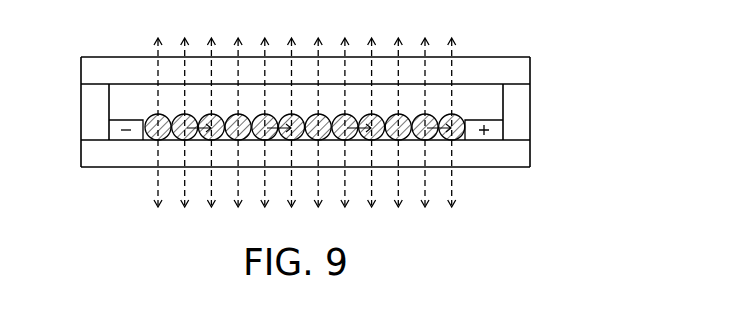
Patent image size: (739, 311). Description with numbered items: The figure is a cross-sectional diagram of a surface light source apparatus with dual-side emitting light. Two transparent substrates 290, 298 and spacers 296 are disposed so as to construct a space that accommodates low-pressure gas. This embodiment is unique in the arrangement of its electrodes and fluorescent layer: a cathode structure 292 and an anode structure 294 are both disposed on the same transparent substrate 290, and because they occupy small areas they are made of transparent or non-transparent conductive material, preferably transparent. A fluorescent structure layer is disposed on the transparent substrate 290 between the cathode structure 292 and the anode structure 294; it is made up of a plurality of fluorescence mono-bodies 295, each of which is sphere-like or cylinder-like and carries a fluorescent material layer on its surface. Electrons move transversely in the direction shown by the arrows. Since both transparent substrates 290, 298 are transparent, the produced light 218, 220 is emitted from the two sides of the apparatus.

The light 218 is at (150, 53).
The light 220 is at (150, 187).
The transparent substrate 290 is at (523, 159).
The cathode structure 292 is at (122, 137).
The anode structure 294 is at (497, 130).
The fluorescence mono-body 295 is at (455, 137).
The spacer 296 is at (523, 112).
The transparent substrate 298 is at (520, 72).